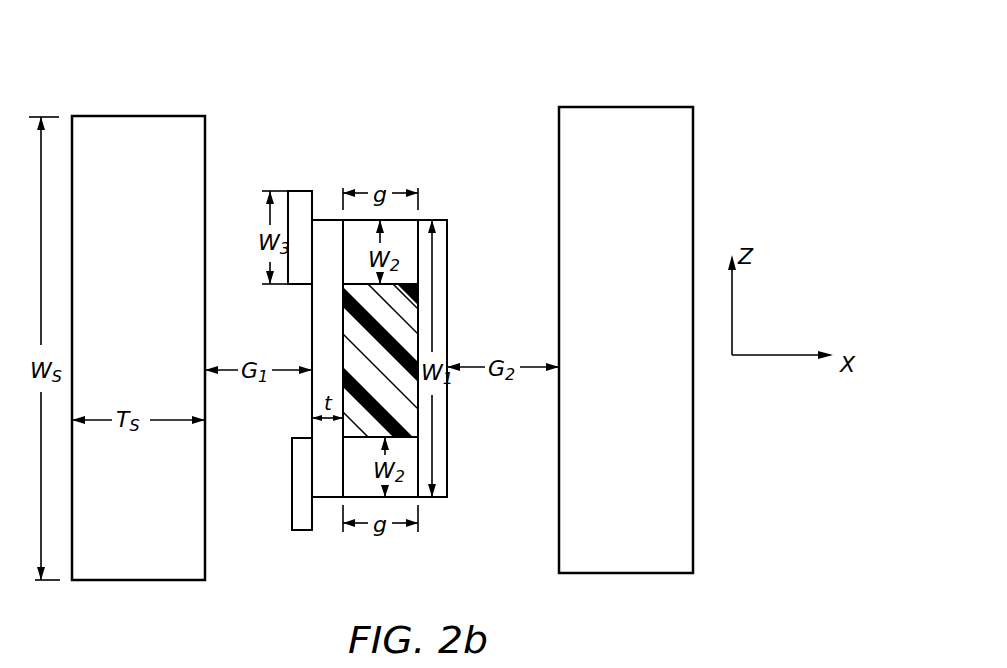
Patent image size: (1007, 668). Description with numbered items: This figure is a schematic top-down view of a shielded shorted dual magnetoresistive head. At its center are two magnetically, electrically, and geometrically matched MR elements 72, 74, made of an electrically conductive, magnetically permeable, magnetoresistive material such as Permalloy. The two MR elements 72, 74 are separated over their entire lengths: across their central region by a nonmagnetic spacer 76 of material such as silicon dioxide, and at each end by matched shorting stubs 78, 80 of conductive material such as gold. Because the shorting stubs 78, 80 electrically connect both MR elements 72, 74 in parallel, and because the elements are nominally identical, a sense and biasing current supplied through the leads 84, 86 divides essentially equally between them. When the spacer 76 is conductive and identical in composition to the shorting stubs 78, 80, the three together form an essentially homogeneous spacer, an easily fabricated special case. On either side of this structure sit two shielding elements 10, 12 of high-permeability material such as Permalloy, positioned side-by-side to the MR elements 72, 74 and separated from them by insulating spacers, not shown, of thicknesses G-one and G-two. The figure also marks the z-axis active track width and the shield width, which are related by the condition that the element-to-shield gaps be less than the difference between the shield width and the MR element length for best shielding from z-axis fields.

The shielding element 10 is at (153, 96).
The shielding element 12 is at (652, 88).
The MR element 72 is at (324, 206).
The MR element 74 is at (440, 205).
The nonmagnetic spacer 76 is at (413, 387).
The shorting stub 78 is at (413, 482).
The shorting stub 80 is at (403, 230).
The lead 84 is at (300, 197).
The lead 86 is at (305, 523).